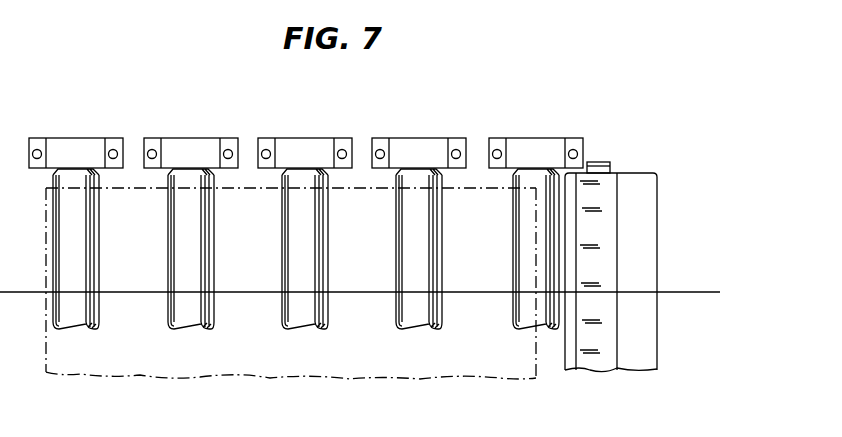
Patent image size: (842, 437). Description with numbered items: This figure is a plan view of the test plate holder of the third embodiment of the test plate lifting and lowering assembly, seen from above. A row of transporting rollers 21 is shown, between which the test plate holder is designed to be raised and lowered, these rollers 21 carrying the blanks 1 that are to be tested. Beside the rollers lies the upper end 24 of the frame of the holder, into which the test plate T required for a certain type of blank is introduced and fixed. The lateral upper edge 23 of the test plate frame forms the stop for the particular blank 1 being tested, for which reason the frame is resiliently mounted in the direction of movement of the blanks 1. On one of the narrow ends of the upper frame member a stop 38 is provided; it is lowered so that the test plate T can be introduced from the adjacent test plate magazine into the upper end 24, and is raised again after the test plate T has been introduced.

The blank 1 is at (370, 357).
The transporting roller 21 is at (163, 304).
The lateral upper edge 23 is at (563, 350).
The upper end 24 is at (647, 277).
The stop 38 is at (598, 160).
The test plate T is at (600, 222).